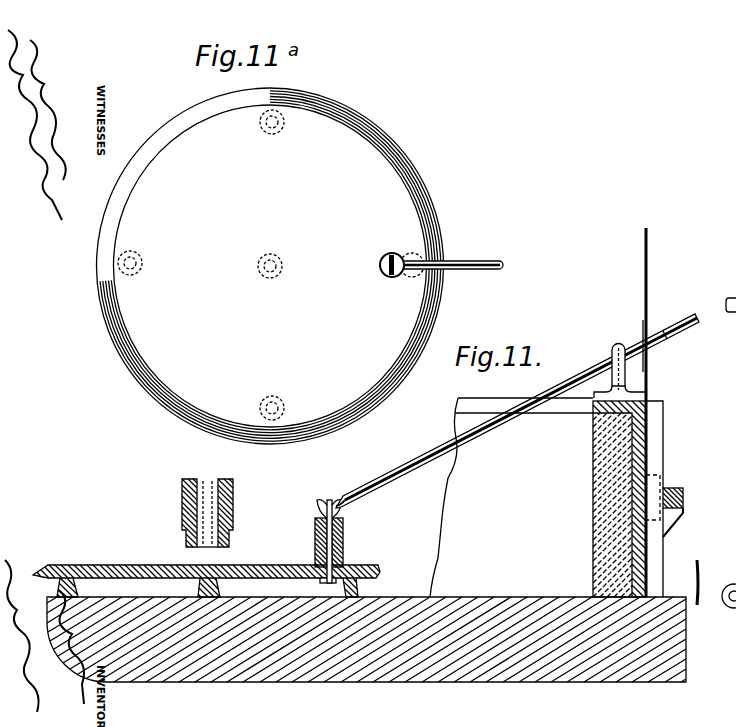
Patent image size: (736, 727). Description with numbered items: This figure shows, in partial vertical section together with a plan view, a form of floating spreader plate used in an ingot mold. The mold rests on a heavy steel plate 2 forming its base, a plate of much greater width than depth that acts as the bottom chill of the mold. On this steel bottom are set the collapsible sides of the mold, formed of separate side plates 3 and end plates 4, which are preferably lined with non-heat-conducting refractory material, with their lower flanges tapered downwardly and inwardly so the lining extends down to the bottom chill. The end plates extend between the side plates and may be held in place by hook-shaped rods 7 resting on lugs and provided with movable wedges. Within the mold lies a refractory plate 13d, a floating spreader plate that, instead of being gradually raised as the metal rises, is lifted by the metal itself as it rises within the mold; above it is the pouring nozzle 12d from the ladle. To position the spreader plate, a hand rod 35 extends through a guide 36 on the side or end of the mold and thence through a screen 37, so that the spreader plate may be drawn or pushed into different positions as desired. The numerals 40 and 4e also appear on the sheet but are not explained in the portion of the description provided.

In FIG. 11, the heavy steel plate 2 is at (489, 610).
In FIG. 11, the side plates 3 is at (657, 440).
In FIG. 11, the end plates 4 is at (641, 467).
In FIG. 11, the hook-shaped rods 7 is at (684, 498).
In FIG. 11, the pouring nozzle 12d is at (182, 506).
In FIG. 11A, the refractory plate 13d is at (270, 266).
In FIG. 11, the refractory plate 13d is at (130, 561).
In FIG. 11A, the hand rod 35 is at (474, 266).
In FIG. 11, the hand rod 35 is at (418, 461).
In FIG. 11, the guide 36 is at (618, 343).
In FIG. 11, the screen 37 is at (649, 302).
In FIG. 11, the bracket 40 is at (729, 313).
In FIG. 11, the guide 4e is at (721, 690).